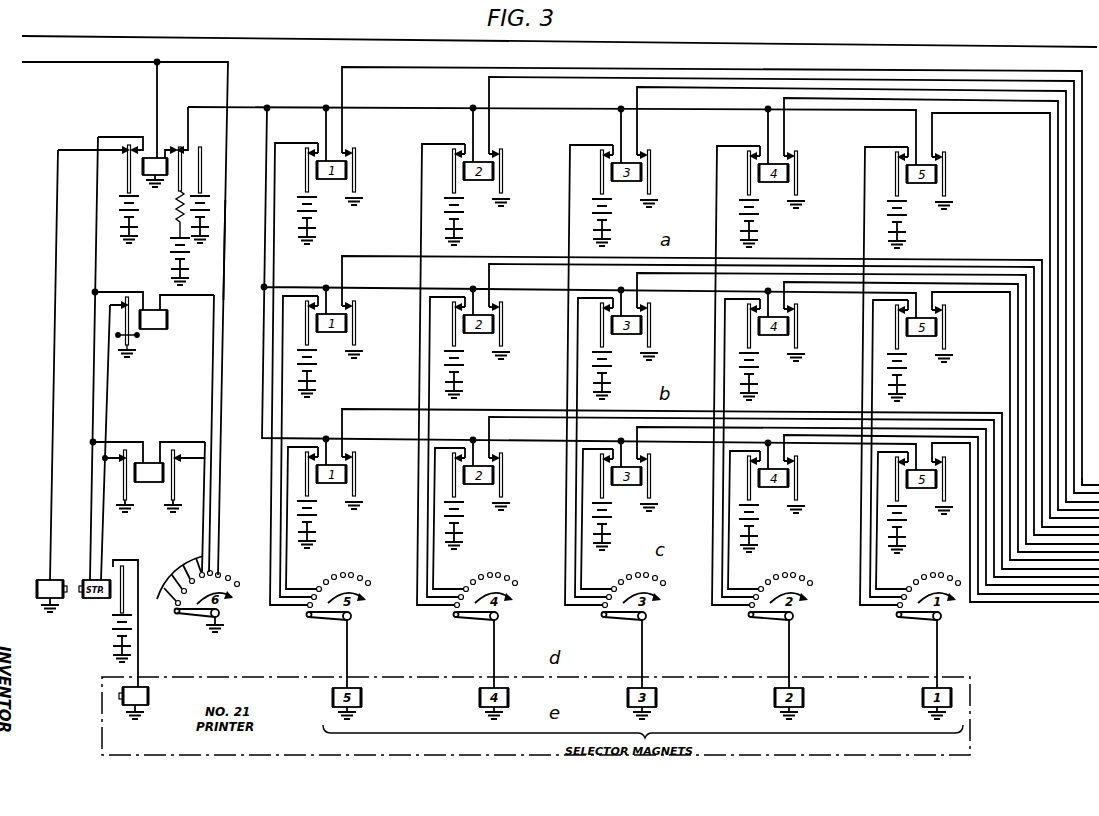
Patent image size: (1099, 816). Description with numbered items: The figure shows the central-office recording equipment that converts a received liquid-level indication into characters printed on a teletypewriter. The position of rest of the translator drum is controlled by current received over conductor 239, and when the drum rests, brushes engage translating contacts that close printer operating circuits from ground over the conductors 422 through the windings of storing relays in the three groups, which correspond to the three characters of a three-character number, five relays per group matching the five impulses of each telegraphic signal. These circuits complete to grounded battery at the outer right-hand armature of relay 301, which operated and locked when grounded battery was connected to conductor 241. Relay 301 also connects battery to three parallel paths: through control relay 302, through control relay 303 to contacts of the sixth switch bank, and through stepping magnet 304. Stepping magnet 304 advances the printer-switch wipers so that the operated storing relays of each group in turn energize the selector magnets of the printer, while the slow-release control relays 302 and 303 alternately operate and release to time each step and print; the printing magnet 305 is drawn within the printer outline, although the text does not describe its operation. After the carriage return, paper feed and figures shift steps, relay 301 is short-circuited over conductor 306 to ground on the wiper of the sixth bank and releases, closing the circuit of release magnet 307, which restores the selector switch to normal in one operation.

The conductor 239 is at (55, 38).
The conductor 241 is at (57, 63).
The relay 301 is at (152, 157).
The control relay 302 is at (153, 323).
The control relay 303 is at (151, 462).
The stepping magnet 304 is at (100, 578).
The printing magnet 305 is at (149, 691).
The conductor 306 is at (225, 250).
The release magnet 307 is at (45, 578).
The conductors 422 is at (1078, 476).